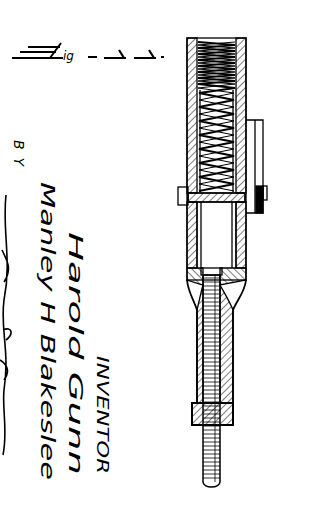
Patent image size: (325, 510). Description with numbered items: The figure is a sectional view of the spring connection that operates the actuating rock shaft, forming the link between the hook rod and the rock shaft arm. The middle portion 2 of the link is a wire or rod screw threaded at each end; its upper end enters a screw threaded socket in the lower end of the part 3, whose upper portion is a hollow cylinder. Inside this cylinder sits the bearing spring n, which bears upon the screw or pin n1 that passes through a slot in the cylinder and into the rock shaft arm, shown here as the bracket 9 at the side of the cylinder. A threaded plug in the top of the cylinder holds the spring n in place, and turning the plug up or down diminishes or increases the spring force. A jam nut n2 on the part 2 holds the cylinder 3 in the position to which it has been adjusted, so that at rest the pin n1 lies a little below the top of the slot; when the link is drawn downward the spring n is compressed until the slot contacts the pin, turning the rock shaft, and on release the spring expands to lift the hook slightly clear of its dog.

The bearing spring n is at (246, 106).
The screw or pin n1 is at (186, 212).
The bracket 9 is at (263, 148).
The part 3 of the link 3 is at (246, 279).
The jam nut n2 is at (235, 414).
The middle portion of the link 2 is at (222, 457).